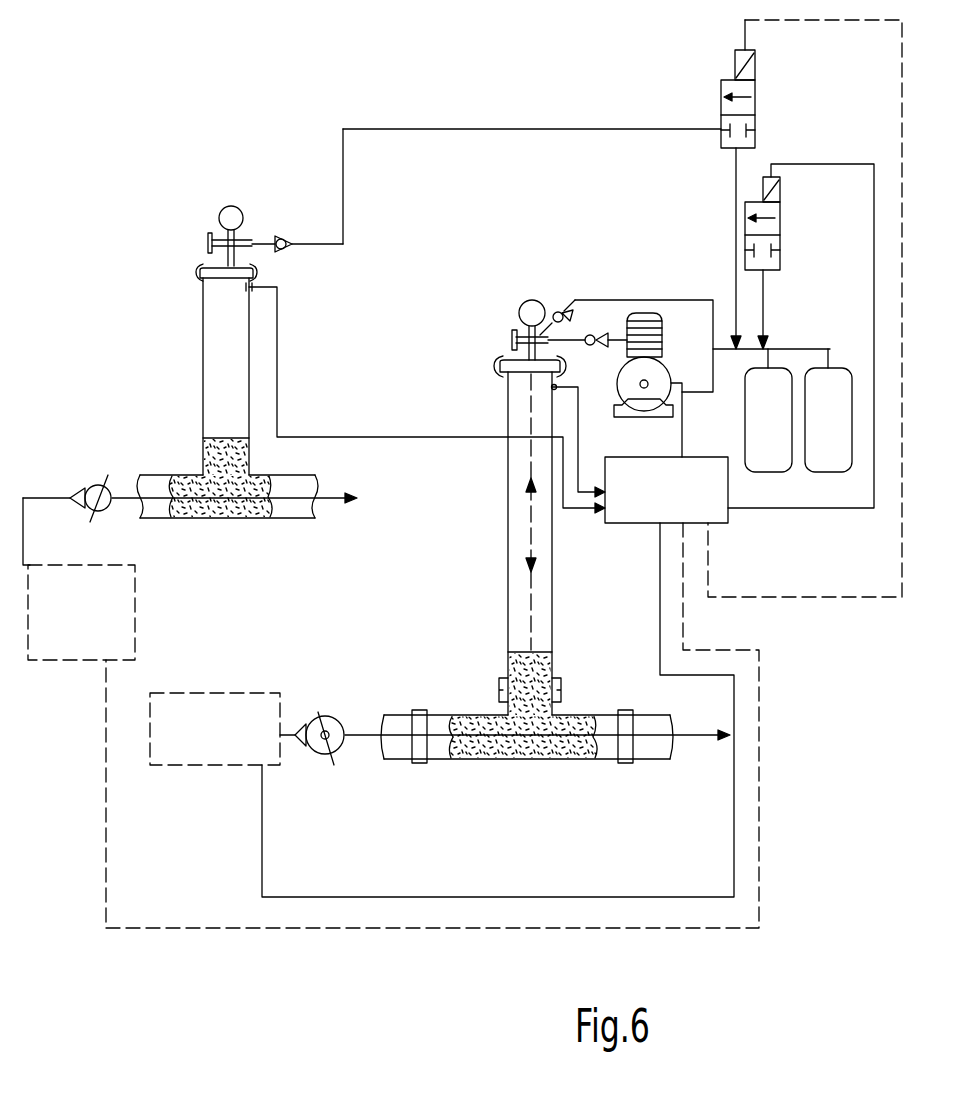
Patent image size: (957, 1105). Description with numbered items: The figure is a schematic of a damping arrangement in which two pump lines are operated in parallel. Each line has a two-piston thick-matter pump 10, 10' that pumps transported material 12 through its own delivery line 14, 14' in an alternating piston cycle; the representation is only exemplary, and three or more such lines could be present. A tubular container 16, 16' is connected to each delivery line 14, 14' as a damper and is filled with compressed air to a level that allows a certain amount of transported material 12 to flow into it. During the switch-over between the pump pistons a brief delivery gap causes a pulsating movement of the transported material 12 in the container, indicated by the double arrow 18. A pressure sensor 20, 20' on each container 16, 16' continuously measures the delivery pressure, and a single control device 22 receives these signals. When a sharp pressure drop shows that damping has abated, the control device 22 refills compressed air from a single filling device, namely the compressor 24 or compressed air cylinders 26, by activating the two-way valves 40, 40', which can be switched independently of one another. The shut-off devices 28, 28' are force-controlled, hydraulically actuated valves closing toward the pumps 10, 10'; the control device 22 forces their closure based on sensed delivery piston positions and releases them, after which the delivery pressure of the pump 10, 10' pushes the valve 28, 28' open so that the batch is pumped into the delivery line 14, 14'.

The thick-matter pump 10 is at (215, 698).
The thick-matter pump 10' is at (133, 579).
The transported material 12 is at (545, 690).
The delivery line 14 is at (537, 686).
The delivery line 14' is at (190, 448).
The tubular container 16 is at (471, 543).
The tubular container 16' is at (181, 366).
The double arrow 18 is at (532, 530).
The pressure sensor 20 is at (523, 398).
The pressure sensor 20' is at (400, 359).
The control device 22 is at (729, 487).
The compressor 24 is at (670, 332).
The compressed air cylinders 26 is at (855, 405).
The non-return valve 28 is at (318, 792).
The non-return valve 28' is at (83, 453).
The two-way valve 40 is at (801, 336).
The two-way valve 40' is at (793, 199).